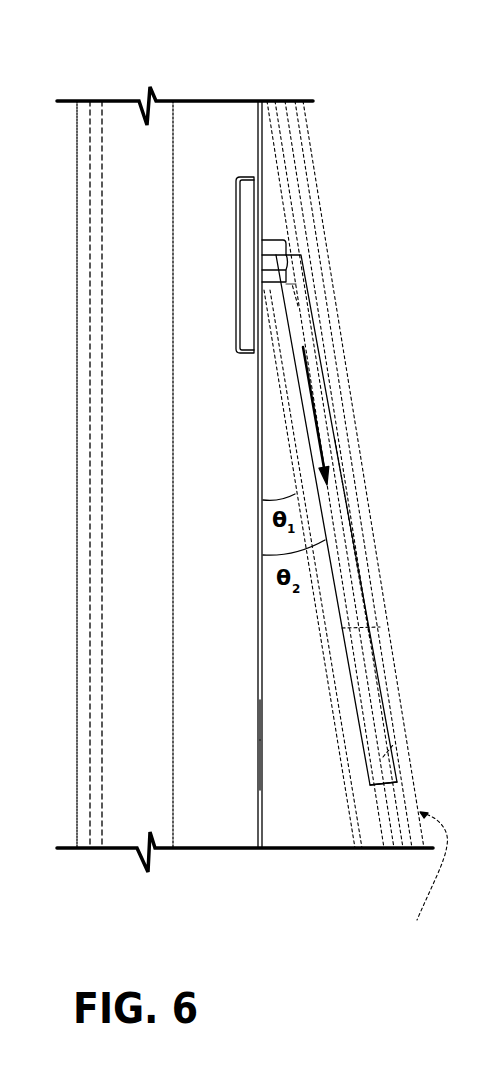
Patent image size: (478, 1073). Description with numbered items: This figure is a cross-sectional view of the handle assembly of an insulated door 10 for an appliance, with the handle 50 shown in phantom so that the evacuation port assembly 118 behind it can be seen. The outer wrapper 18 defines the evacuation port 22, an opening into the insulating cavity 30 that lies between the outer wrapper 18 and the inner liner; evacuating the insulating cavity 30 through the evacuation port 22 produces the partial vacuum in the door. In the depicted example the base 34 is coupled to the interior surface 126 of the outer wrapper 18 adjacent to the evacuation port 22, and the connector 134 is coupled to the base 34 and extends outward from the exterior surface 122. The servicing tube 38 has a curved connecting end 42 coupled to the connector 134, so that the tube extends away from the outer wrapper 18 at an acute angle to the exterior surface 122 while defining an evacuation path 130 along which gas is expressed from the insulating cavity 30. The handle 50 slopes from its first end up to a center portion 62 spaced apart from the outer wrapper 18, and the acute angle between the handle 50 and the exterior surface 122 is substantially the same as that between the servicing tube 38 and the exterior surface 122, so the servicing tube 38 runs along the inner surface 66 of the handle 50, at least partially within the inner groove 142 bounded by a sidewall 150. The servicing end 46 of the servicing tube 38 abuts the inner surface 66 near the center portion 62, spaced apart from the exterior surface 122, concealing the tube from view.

The insulated door 10 is at (109, 92).
The insulating cavity 30 is at (202, 147).
The evacuation port 22 is at (230, 246).
The outer wrapper 18 is at (263, 818).
The interior surface 126 is at (262, 790).
The exterior surface 122 is at (263, 738).
The base 34 is at (251, 190).
The connector 134 is at (273, 242).
The servicing tube 38 is at (289, 258).
The connecting end 42 is at (283, 287).
The evacuation port assembly 118 is at (346, 271).
The inner groove 142 is at (362, 527).
The handle 50 is at (365, 490).
The sidewall 150 is at (380, 627).
The inner surface 66 is at (298, 306).
The evacuation path 130 is at (326, 401).
The servicing end 46 is at (380, 770).
The center portion 62 is at (428, 880).